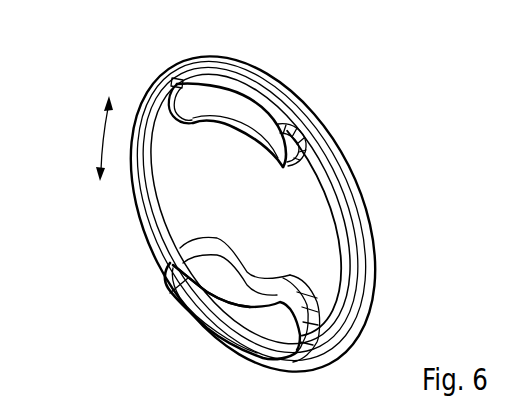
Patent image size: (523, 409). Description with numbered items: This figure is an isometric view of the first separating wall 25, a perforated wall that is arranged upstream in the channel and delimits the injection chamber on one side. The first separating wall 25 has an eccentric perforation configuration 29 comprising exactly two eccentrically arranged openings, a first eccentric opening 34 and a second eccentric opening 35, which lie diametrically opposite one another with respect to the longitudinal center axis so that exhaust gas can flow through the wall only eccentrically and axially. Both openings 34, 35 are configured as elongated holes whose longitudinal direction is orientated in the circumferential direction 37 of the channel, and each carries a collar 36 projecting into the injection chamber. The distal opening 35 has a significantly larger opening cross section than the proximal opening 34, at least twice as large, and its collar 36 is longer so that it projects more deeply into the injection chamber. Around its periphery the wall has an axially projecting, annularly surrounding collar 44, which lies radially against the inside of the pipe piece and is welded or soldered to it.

The first separating wall 25 is at (284, 209).
The perforation configuration 29 is at (287, 172).
The first eccentric opening 34 is at (233, 109).
The second eccentric opening 35 is at (263, 334).
The collar 36 is at (257, 140).
The circumferential direction 37 is at (98, 134).
The collar 44 is at (363, 228).